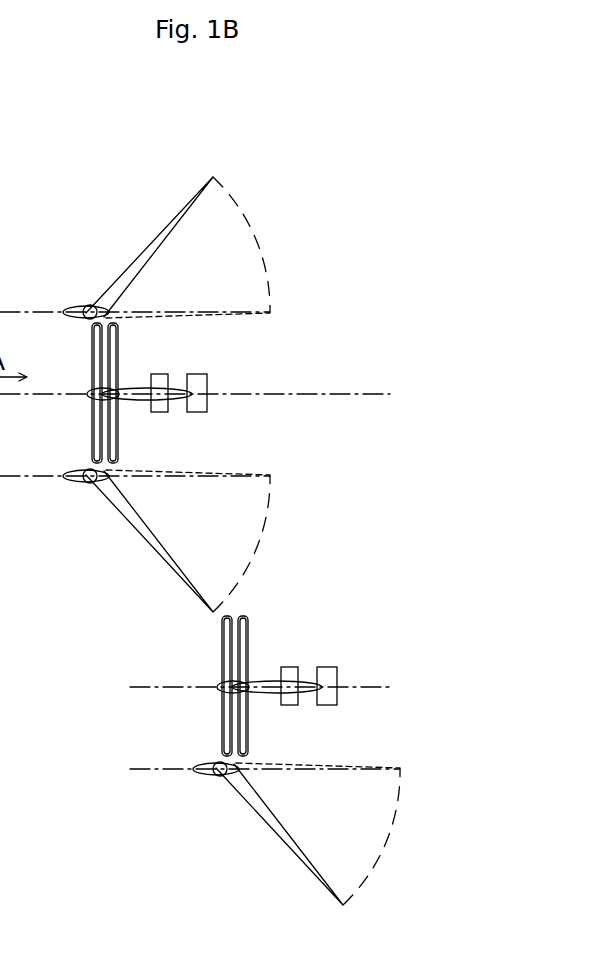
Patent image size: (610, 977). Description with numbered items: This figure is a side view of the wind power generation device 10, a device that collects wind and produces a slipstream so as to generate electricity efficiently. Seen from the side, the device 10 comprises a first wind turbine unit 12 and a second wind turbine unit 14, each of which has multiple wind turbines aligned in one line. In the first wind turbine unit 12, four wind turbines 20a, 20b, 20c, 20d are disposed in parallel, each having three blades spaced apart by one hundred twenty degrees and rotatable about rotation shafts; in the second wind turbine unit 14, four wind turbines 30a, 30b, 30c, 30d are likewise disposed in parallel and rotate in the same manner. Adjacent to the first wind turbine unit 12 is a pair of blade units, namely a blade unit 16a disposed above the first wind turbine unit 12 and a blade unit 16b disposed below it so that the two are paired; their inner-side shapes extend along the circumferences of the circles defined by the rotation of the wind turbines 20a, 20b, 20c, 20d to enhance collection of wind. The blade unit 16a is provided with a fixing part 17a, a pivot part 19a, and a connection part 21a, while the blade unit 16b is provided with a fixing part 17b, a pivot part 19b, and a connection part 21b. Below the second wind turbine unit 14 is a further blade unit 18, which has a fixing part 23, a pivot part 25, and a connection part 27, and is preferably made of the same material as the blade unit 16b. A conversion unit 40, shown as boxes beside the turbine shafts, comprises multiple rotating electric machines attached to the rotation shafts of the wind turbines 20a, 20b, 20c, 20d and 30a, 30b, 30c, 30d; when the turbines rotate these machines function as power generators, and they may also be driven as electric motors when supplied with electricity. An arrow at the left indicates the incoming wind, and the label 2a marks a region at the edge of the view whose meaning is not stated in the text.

The wind power generation device 10 is at (336, 138).
The first wind turbine unit 12 is at (92, 391).
The second wind turbine unit 14 is at (222, 684).
The blade unit 16a is at (147, 247).
The blade unit 16b is at (148, 546).
The fixing part 17a is at (75, 309).
The fixing part 17b is at (75, 482).
The blade unit 18 is at (296, 858).
The pivot part 19a is at (190, 200).
The pivot part 19b is at (178, 562).
The wind turbine 20a is at (92, 423).
The wind turbine 20b is at (118, 425).
The wind turbine 20c is at (92, 452).
The wind turbine 20d is at (118, 452).
The connection part 21a is at (89, 304).
The connection part 21b is at (90, 484).
The fixing part 23 is at (197, 781).
The pivot part 25 is at (255, 816).
The connection part 27 is at (215, 778).
The fluid flow 2a is at (12, 589).
The wind turbine 30a is at (222, 717).
The wind turbine 30b is at (248, 719).
The wind turbine 30c is at (222, 746).
The wind turbine 30d is at (248, 747).
The conversion unit 40 is at (160, 373).